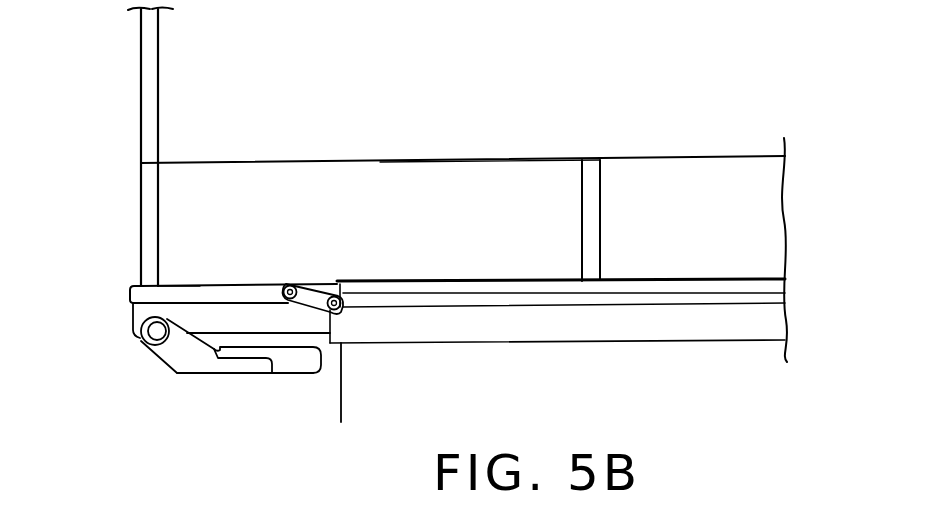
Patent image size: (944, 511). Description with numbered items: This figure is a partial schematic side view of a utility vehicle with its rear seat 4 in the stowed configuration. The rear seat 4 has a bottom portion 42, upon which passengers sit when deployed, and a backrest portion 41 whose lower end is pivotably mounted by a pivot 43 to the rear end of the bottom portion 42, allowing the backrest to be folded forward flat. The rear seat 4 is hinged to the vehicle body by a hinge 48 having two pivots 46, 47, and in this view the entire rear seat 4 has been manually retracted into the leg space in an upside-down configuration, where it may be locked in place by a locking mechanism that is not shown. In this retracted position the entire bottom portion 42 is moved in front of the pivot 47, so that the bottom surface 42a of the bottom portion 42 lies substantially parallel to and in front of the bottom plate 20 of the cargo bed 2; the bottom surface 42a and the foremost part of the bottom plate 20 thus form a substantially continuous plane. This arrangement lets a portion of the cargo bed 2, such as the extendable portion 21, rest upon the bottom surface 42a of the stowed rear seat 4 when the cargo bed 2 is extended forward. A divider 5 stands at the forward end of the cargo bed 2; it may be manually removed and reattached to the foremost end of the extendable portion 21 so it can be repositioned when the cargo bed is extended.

The cargo bed 2 is at (698, 157).
The rear seat 4 is at (229, 375).
The divider 5 is at (158, 85).
The bottom plate 20 is at (787, 284).
The extendable portion 21 is at (397, 162).
The backrest portion 41 is at (300, 374).
The bottom portion 42 is at (133, 316).
The bottom surface 42a is at (182, 285).
The pivot 43 is at (148, 340).
The pivot 46 is at (290, 285).
The pivot 47 is at (338, 309).
The hinge 48 is at (313, 290).